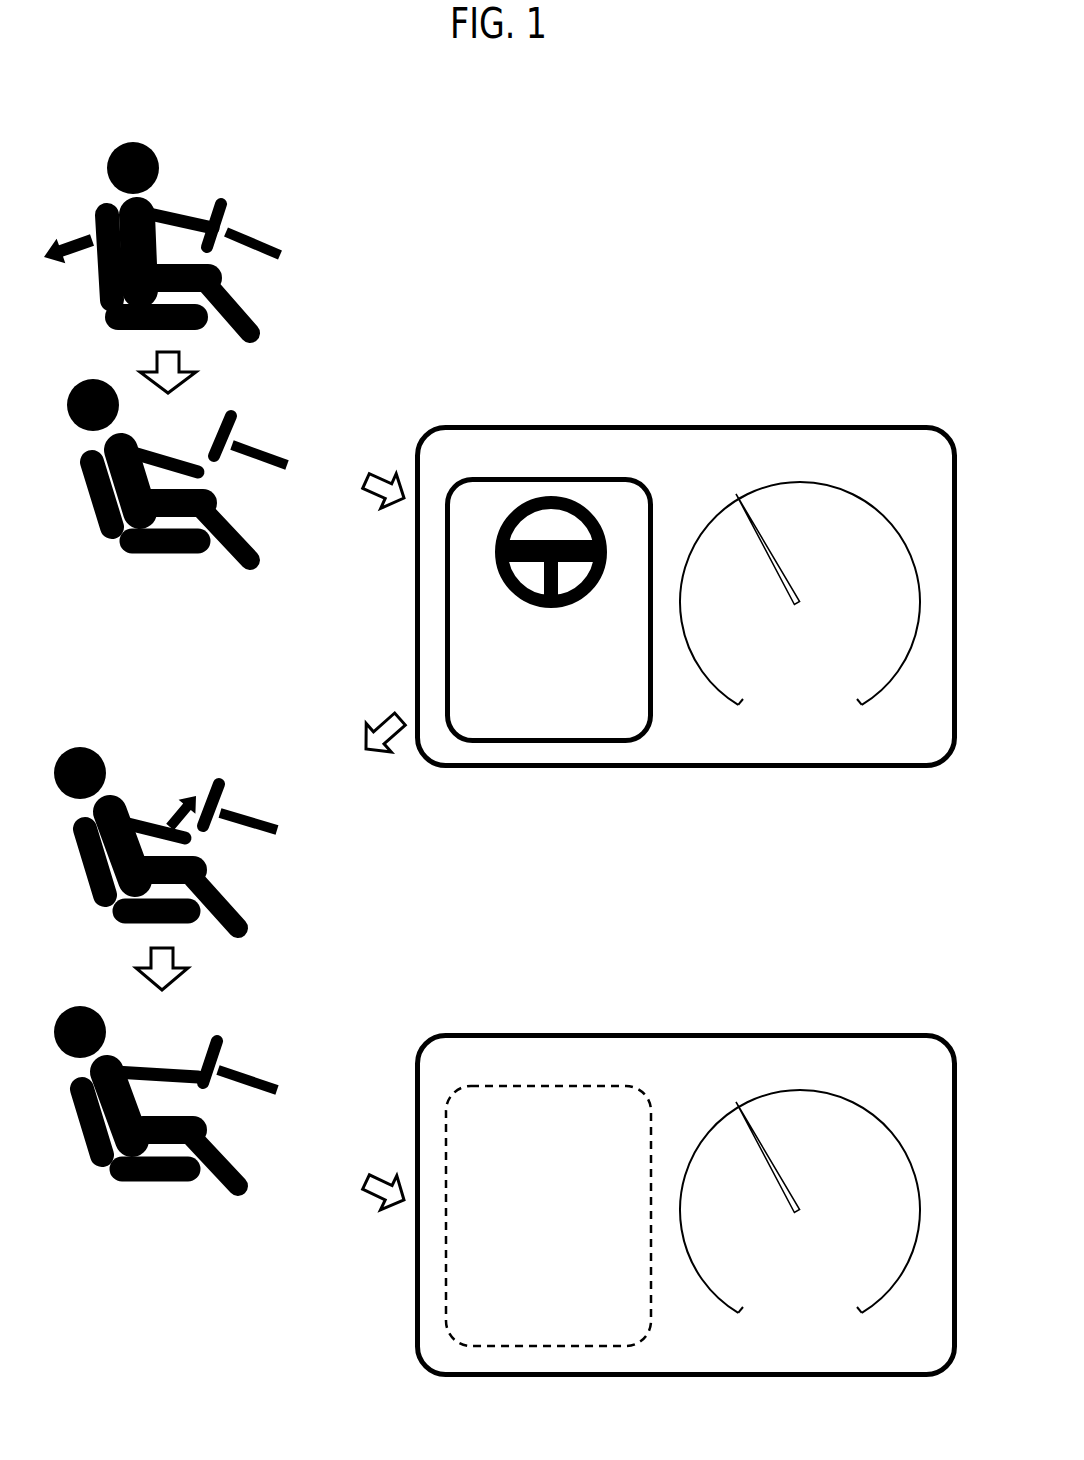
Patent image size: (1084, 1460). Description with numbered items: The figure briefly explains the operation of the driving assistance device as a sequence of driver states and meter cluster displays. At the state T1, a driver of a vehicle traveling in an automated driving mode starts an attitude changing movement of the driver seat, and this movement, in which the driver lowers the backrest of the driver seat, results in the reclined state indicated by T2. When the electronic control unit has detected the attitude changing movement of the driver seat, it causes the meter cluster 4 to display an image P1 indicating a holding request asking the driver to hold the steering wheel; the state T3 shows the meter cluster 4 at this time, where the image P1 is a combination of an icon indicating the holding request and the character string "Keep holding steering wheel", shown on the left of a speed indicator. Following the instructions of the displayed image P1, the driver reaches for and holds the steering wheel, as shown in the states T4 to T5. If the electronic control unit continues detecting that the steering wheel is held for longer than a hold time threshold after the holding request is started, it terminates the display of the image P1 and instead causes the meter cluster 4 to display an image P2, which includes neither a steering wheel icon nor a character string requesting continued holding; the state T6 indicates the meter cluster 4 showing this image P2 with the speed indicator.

The attitude changing movement start state T1 is at (278, 159).
The lowered backrest state T2 is at (280, 399).
The holding request display state T3 is at (748, 329).
The steering wheel holding start state T4 is at (280, 757).
The steering wheel held state T5 is at (280, 1029).
The holding request terminated display state T6 is at (766, 964).
The meter cluster 4 is at (873, 427).
The holding request image P1 is at (593, 478).
The holding request terminated image P2 is at (596, 1086).